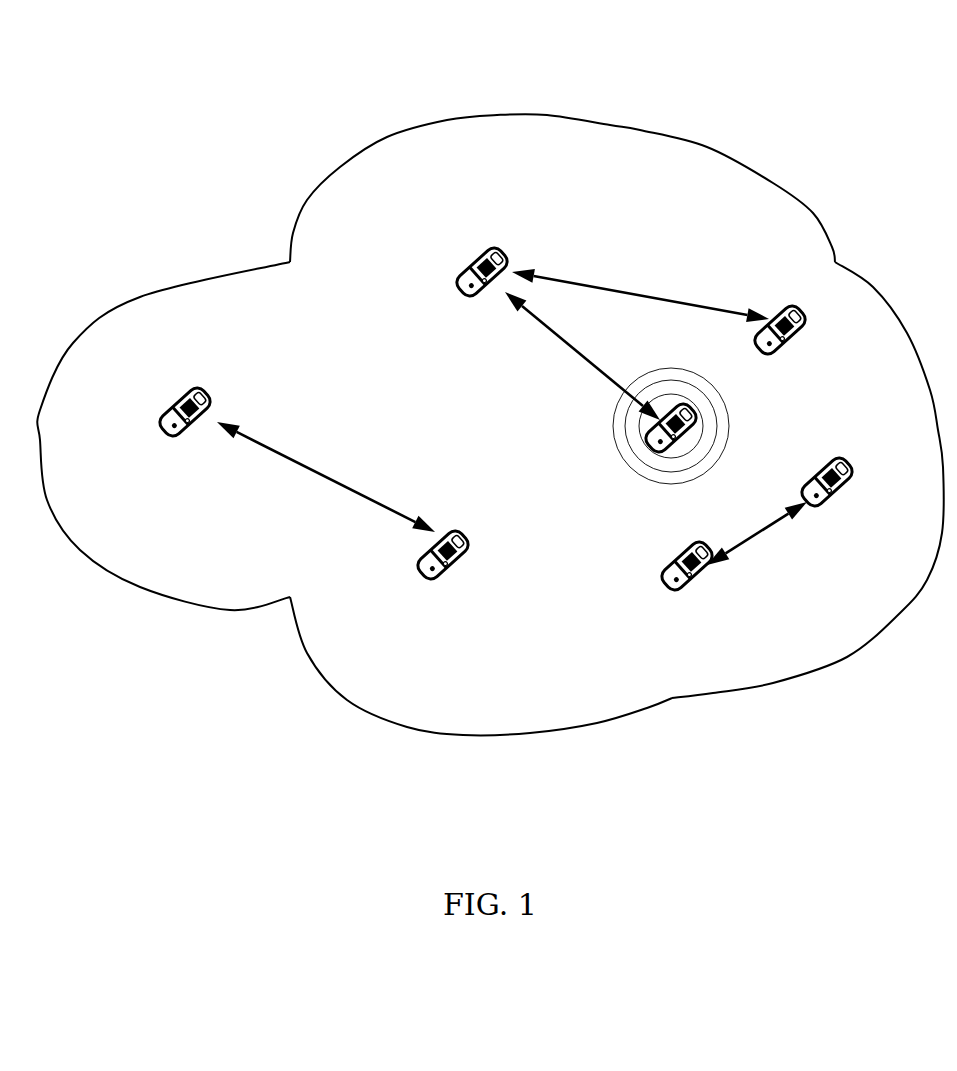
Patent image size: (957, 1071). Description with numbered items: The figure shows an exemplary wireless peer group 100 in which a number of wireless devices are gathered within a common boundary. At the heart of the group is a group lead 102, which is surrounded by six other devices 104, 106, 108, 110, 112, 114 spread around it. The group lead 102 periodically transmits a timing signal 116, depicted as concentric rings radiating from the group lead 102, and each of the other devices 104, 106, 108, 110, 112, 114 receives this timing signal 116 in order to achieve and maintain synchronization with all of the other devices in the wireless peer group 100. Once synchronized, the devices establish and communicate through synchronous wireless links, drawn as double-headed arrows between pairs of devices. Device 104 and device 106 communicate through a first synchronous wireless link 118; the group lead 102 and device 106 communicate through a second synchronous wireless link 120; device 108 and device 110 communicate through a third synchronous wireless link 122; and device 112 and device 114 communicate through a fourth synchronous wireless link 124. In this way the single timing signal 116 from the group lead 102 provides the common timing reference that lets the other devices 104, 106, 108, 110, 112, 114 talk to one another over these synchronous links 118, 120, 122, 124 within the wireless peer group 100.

The wireless peer group 100 is at (795, 81).
The group lead 102 is at (697, 396).
The other device 104 is at (794, 308).
The other device 106 is at (496, 250).
The other device 108 is at (199, 390).
The other device 110 is at (457, 533).
The other device 112 is at (701, 544).
The other device 114 is at (841, 460).
The timing signal 116 is at (733, 438).
The first synchronous wireless link 118 is at (639, 292).
The second synchronous wireless link 120 is at (598, 366).
The third synchronous wireless link 122 is at (332, 483).
The fourth synchronous wireless link 124 is at (757, 532).